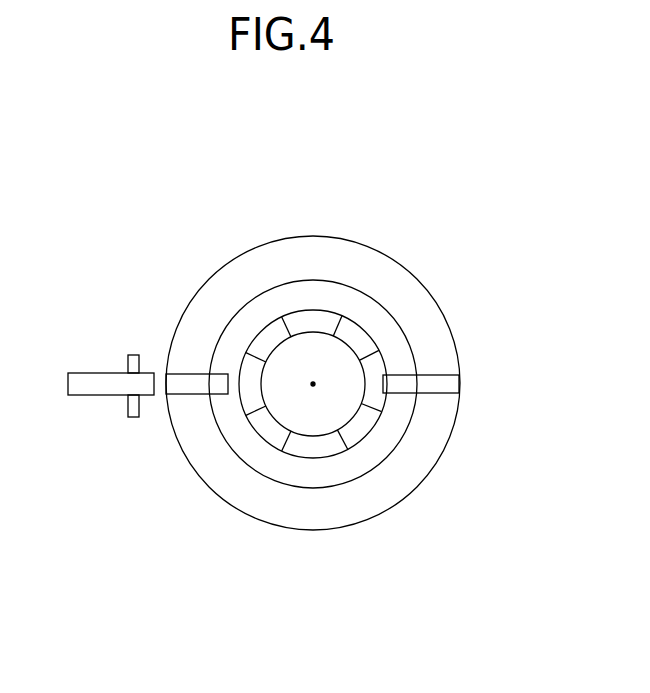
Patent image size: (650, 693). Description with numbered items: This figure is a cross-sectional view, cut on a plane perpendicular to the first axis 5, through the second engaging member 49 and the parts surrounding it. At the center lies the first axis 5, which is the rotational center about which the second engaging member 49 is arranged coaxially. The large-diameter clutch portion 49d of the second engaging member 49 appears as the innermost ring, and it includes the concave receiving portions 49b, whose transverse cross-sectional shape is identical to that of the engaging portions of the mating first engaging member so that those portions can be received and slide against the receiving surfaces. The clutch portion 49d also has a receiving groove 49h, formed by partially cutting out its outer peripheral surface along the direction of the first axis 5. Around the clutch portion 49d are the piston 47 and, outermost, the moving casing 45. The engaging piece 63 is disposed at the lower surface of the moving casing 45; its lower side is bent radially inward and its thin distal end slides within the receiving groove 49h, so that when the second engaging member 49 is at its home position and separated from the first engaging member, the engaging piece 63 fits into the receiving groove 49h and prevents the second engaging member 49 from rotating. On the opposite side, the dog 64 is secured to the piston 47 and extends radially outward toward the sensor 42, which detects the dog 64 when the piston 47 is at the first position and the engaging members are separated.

The first axis 5 is at (314, 385).
The sensor 42 is at (87, 372).
The moving casing 45 is at (203, 278).
The piston 47 is at (258, 292).
The second engaging member 49 is at (343, 376).
The receiving portion 49b is at (268, 429).
The clutch portion 49d is at (313, 445).
The receiving groove 49h is at (386, 391).
The engaging piece 63 is at (448, 371).
The dog 64 is at (187, 395).